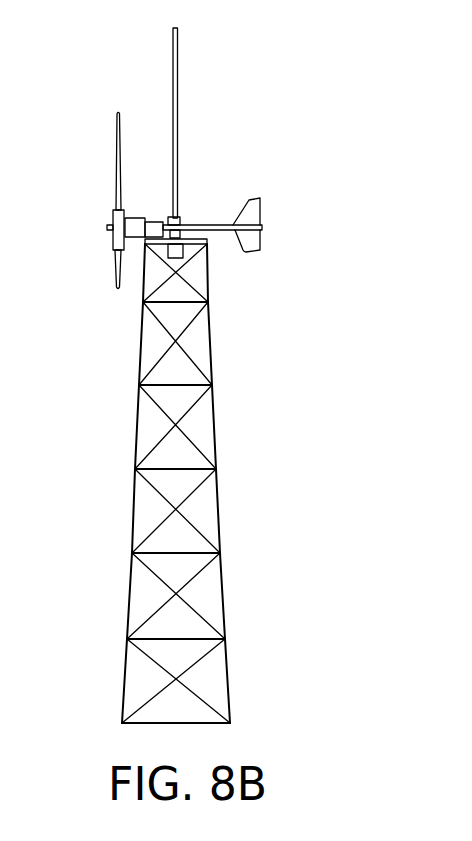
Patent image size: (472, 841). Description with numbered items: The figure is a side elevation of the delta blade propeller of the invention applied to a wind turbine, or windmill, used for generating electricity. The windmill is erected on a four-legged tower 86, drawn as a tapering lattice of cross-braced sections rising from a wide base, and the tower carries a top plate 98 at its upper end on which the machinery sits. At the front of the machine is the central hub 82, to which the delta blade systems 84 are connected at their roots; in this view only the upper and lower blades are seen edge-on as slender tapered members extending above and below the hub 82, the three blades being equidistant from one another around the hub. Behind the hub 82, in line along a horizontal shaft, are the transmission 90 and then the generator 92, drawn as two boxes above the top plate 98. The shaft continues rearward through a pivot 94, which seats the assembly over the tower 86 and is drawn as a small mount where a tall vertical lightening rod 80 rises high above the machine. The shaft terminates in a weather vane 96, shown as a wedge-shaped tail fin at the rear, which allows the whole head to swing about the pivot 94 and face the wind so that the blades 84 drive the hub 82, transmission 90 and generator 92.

The lightening rod 80 is at (178, 35).
The central hub 82 is at (112, 218).
The delta blade systems 84 is at (115, 172).
The four-legged tower 86 is at (133, 442).
The transmission 90 is at (135, 217).
The generator 92 is at (155, 221).
The pivot 94 is at (182, 222).
The weather vane 96 is at (252, 210).
The top plate 98 is at (192, 243).